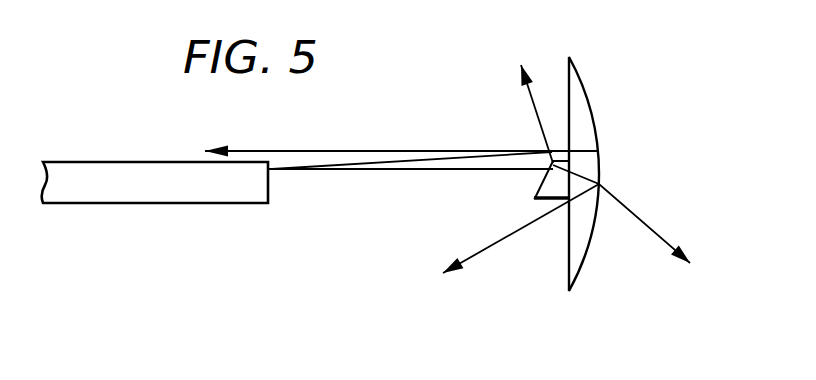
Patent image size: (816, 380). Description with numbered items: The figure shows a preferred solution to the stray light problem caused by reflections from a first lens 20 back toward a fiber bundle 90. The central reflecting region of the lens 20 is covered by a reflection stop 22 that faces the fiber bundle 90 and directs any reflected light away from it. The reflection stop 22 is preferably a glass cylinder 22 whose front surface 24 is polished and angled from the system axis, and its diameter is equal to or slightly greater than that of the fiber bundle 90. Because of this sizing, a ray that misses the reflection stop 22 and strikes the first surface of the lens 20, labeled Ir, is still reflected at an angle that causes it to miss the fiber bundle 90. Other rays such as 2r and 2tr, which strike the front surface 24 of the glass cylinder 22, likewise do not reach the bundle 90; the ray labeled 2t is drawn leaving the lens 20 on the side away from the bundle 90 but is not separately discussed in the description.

The fiber bundle 90 is at (134, 152).
The first lens 20 is at (596, 127).
The front surface 24 is at (537, 197).
The reflection stop 22 is at (410, 214).
The ray 1r Ir is at (402, 132).
The ray 2r is at (519, 96).
The transmitted ray 2t is at (636, 224).
The ray 2tr is at (505, 243).